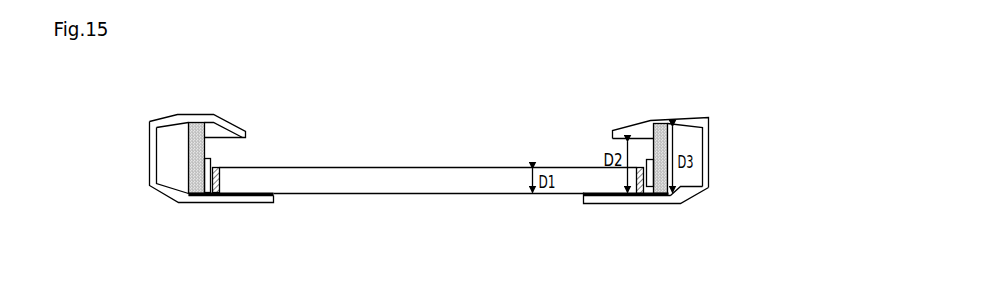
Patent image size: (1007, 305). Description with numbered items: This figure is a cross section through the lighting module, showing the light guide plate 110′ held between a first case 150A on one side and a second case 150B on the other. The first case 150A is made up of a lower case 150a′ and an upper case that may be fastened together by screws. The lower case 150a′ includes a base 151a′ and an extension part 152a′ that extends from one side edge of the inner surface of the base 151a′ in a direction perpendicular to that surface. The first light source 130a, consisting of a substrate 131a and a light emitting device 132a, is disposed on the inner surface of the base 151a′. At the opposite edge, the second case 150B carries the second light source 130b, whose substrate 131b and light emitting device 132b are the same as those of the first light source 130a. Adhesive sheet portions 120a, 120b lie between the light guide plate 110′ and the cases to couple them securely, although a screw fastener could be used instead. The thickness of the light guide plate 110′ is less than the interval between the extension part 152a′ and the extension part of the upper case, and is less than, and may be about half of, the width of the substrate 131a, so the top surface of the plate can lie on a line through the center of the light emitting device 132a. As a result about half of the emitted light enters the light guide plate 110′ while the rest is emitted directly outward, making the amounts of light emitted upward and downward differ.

The light guide plate 110′ is at (408, 195).
The adhesive sheet 120a is at (593, 200).
The adhesive sheet 120b is at (273, 200).
The first light source 130a is at (655, 198).
The substrate 131a is at (663, 195).
The light emitting device 132a is at (647, 193).
The second light source 130b is at (215, 202).
The substrate 131b is at (190, 195).
The light emitting device 132b is at (230, 204).
The first case 150A is at (726, 181).
The second case 150B is at (172, 198).
The lower case 150a′ is at (701, 213).
The base 151a′ is at (686, 196).
The extension part 152a′ is at (690, 204).